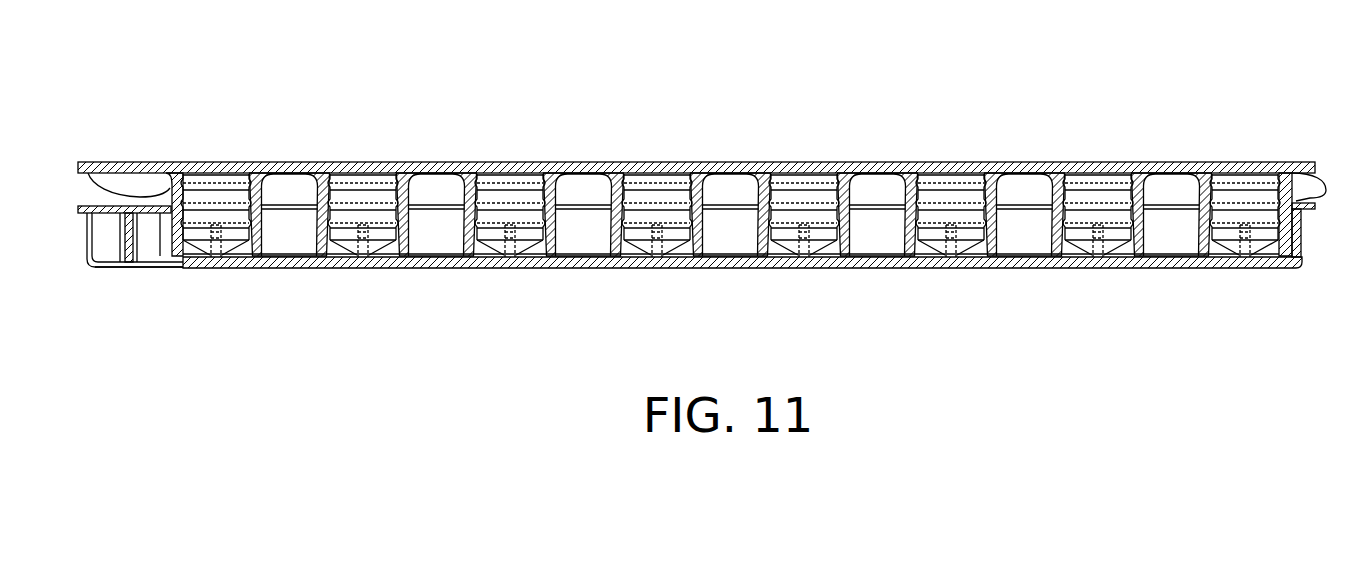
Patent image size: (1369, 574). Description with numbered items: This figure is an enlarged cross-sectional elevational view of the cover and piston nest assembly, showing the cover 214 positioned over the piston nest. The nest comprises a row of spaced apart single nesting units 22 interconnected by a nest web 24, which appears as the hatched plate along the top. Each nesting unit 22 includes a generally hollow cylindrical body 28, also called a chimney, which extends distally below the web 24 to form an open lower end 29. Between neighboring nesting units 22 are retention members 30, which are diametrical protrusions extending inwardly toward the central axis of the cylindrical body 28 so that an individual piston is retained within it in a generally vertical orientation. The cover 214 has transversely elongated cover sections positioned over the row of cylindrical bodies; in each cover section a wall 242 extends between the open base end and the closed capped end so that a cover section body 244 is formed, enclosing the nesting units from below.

The single nesting unit 22 is at (221, 160).
The nest web 24 is at (118, 172).
The hollow cylindrical body 28 is at (104, 205).
The open lower end 29 is at (243, 262).
The retention member 30 is at (328, 161).
The cover 214 is at (86, 214).
The wall 242 is at (142, 245).
The cover section body 244 is at (120, 250).